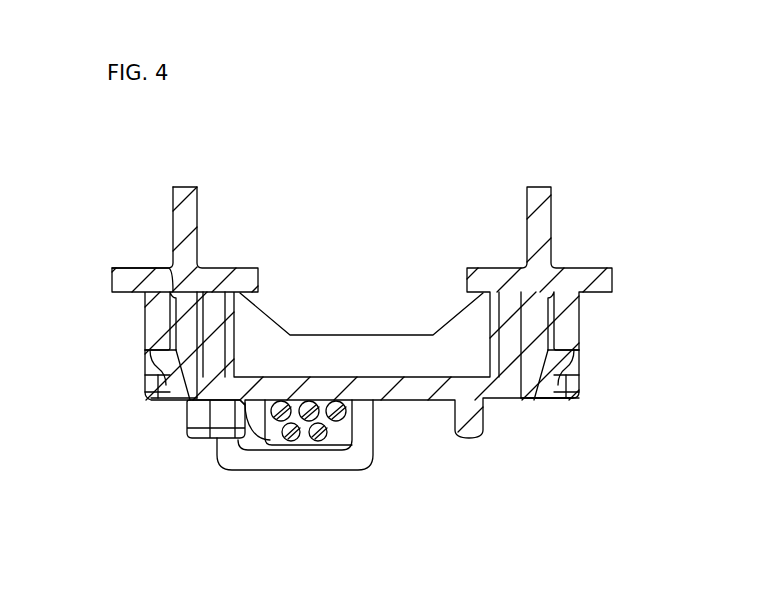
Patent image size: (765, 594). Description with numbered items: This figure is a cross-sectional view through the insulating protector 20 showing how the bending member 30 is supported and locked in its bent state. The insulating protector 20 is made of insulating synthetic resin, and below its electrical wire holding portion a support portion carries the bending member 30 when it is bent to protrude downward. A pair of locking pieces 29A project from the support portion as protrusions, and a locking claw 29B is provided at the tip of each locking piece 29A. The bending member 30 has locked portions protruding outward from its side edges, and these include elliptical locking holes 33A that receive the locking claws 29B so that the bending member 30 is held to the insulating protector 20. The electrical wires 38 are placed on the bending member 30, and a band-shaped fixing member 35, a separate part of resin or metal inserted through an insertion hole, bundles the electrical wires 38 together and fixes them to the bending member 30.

The insulating protector 20 is at (597, 268).
The locking piece 29A is at (182, 405).
The locking claw 29B is at (160, 349).
The locking hole 33A is at (148, 391).
The bending member 30 is at (573, 398).
The fixing member 35 is at (325, 472).
The electrical wire 38 is at (337, 412).